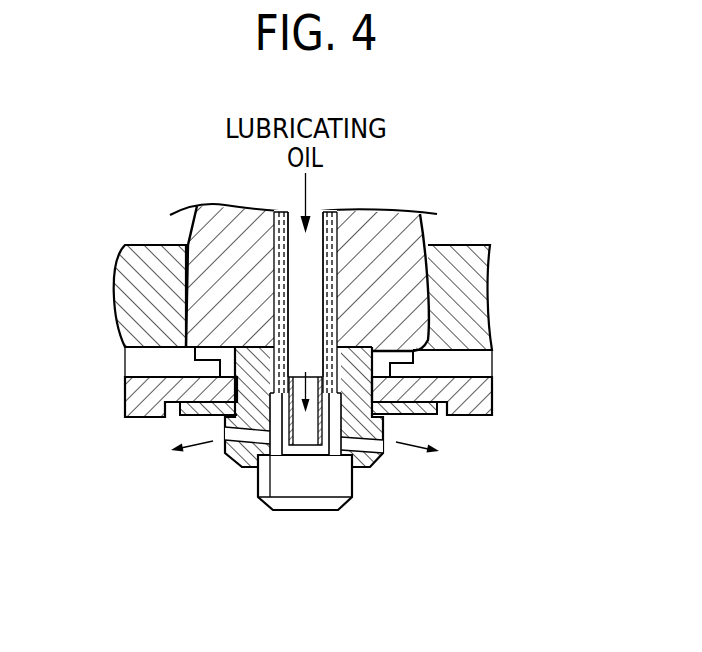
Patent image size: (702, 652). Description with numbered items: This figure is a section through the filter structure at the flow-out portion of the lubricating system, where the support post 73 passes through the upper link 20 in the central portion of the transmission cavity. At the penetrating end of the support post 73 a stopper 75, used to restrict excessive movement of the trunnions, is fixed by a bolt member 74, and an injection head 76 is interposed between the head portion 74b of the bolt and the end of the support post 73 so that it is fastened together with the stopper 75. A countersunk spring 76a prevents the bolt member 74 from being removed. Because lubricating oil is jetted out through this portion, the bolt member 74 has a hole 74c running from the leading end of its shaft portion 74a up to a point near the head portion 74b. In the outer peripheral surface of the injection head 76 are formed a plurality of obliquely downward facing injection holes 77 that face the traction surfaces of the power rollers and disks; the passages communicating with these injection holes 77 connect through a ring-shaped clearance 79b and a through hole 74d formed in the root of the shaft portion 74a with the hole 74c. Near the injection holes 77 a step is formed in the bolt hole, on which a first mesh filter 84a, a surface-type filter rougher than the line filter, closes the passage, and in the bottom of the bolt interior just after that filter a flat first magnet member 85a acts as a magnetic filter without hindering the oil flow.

The link 20 is at (472, 253).
The support post 73 is at (400, 235).
The bolt member 74 is at (300, 512).
The shaft portion 74a is at (345, 272).
The head portion 74b is at (343, 483).
The hole 74c is at (321, 209).
The through hole 74d is at (280, 437).
The stopper 75 is at (140, 393).
The injection head 76 is at (242, 467).
The countersunk spring 76a is at (180, 411).
The injection holes 77 is at (217, 443).
The ring-shaped clearance 79b is at (270, 458).
The first mesh filter 84a is at (315, 367).
The first magnet member 85a is at (310, 433).